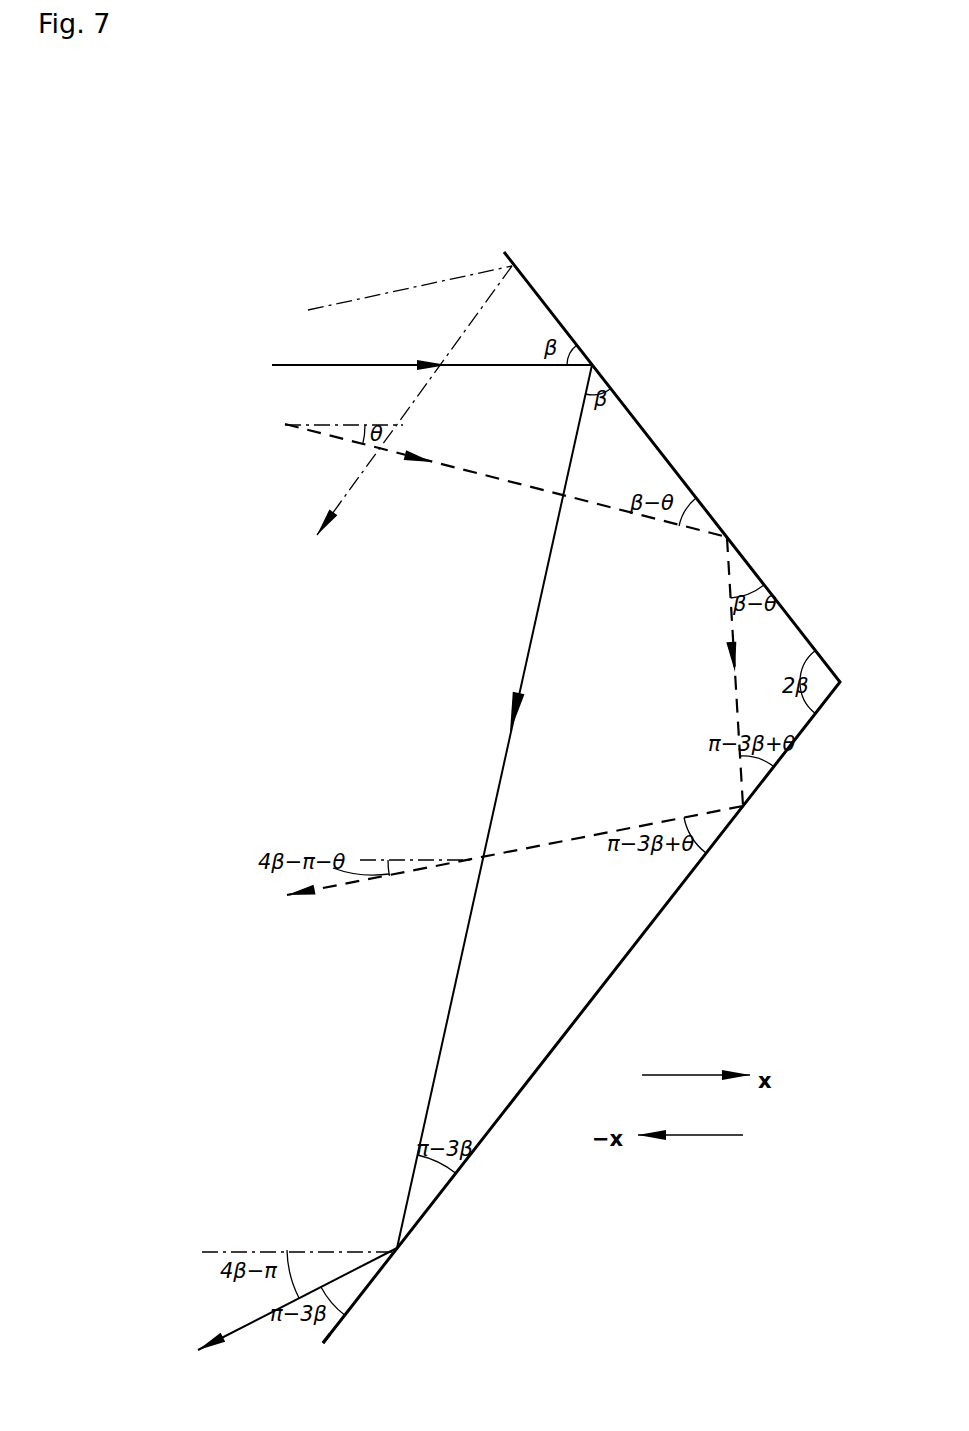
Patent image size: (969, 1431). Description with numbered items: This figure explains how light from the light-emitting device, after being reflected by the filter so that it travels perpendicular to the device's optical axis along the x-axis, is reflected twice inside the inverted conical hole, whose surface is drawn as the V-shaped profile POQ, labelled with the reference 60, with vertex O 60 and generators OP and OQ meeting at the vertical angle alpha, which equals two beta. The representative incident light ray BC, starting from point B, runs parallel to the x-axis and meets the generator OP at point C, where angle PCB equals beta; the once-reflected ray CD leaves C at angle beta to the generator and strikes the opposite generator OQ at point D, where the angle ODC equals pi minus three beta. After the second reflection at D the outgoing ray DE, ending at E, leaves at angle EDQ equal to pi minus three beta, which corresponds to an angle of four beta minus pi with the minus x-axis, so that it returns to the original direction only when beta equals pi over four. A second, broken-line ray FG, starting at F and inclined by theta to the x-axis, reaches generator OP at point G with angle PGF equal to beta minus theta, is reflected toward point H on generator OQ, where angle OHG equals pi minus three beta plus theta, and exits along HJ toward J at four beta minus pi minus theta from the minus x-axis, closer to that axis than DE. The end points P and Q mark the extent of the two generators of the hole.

The reflecting prism / mirror element 60 is at (677, 448).
The incident light ray start point B is at (417, 364).
The first reflection point C is at (592, 370).
The second reflection point D is at (397, 840).
The outgoing light ray end point E is at (284, 1307).
The oblique light ray start point F is at (499, 475).
The first reflection point of oblique ray G is at (721, 652).
The second reflection point of oblique ray H is at (530, 825).
The oblique outgoing light ray end point J is at (367, 890).
The generator end point of inverted conical hole P is at (410, 385).
The vertex of inverted conical hole O is at (832, 681).
The generator end point of inverted conical hole Q is at (317, 1350).